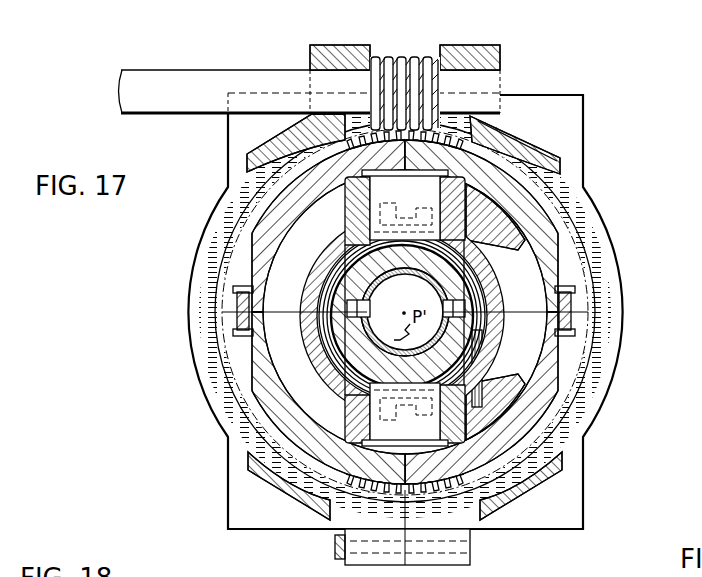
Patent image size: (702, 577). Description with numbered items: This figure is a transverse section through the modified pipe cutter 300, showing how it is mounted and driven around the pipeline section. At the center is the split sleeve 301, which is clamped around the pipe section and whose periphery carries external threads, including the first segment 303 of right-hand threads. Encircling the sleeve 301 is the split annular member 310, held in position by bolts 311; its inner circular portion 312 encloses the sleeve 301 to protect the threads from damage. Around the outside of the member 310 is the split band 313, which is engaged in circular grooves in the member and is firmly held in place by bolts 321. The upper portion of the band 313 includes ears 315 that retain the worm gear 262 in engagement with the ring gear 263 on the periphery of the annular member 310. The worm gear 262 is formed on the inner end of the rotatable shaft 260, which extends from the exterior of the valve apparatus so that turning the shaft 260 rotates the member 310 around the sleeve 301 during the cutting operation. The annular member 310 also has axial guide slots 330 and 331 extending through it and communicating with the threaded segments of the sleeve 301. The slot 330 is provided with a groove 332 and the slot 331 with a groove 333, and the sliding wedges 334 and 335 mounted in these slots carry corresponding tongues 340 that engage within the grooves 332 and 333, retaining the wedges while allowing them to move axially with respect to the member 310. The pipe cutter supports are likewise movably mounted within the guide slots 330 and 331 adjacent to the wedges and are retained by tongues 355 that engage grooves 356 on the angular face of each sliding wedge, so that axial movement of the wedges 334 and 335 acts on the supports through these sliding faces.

The rotatable shaft 260 is at (160, 78).
The worm gear 262 is at (408, 55).
The ring gear 263 is at (480, 128).
The pipe cutter 300 is at (599, 148).
The split sleeve 301 is at (470, 272).
The first segment of right-hand threads 303 is at (492, 288).
The split annular member 310 is at (262, 398).
The bolts 311 is at (243, 292).
The inner circular portion 312 is at (325, 270).
The split band 313 is at (597, 218).
The ears 315 is at (322, 46).
The bolts 321 is at (335, 550).
The axial guide slot 330 is at (466, 210).
The axial guide slot 331 is at (482, 377).
The groove 332 is at (356, 181).
The groove 333 is at (345, 440).
The sliding wedge 334 is at (430, 193).
The sliding wedge 335 is at (422, 443).
The tongues 340 is at (467, 181).
The tongues 355 is at (346, 213).
The grooves 356 is at (484, 380).